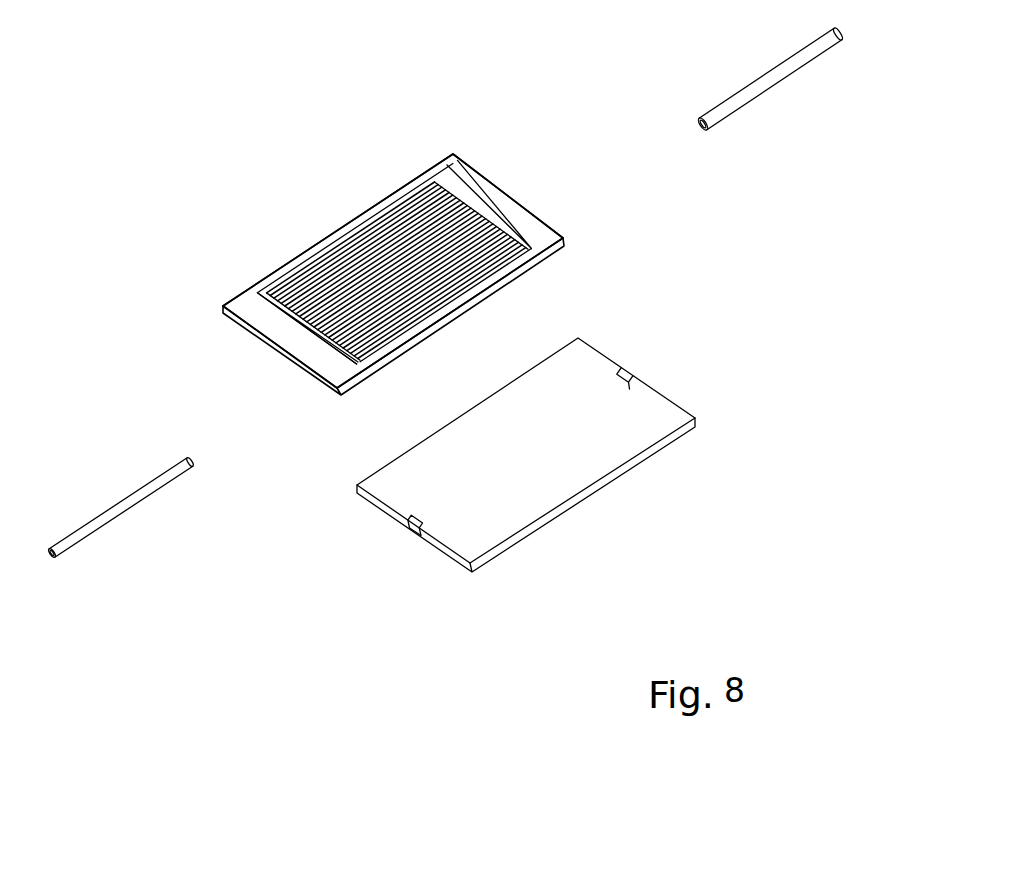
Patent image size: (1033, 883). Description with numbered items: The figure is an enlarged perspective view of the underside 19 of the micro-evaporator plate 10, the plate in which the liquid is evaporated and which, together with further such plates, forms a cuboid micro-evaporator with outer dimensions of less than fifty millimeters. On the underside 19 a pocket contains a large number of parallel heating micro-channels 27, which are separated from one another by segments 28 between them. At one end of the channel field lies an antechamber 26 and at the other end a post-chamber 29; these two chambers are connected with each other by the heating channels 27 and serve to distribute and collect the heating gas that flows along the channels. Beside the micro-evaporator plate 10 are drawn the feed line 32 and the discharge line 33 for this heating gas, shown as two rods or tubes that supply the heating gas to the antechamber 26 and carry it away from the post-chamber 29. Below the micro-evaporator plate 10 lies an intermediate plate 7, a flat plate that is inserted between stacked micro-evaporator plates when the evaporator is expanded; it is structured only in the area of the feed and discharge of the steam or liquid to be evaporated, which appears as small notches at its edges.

The intermediate plate 7 is at (602, 458).
The micro-evaporator plate 10 is at (523, 205).
The underside 19 is at (538, 233).
The antechamber 26 is at (339, 357).
The heating micro-channels 27 is at (332, 268).
The segments 28 is at (380, 228).
The post-chamber 29 is at (449, 181).
The feed line 32 is at (99, 524).
The discharge line 33 is at (747, 96).